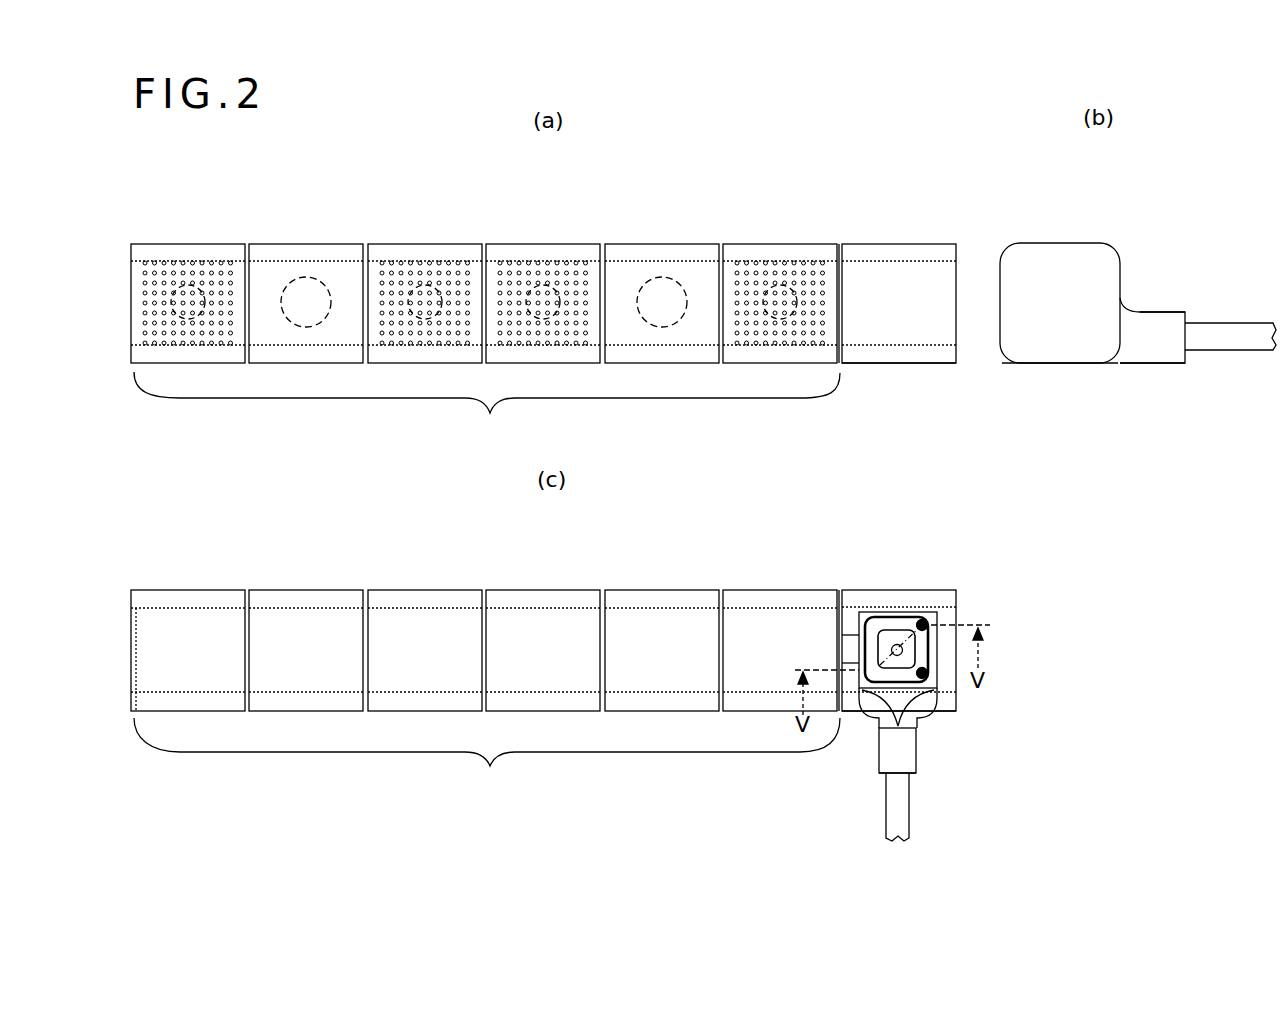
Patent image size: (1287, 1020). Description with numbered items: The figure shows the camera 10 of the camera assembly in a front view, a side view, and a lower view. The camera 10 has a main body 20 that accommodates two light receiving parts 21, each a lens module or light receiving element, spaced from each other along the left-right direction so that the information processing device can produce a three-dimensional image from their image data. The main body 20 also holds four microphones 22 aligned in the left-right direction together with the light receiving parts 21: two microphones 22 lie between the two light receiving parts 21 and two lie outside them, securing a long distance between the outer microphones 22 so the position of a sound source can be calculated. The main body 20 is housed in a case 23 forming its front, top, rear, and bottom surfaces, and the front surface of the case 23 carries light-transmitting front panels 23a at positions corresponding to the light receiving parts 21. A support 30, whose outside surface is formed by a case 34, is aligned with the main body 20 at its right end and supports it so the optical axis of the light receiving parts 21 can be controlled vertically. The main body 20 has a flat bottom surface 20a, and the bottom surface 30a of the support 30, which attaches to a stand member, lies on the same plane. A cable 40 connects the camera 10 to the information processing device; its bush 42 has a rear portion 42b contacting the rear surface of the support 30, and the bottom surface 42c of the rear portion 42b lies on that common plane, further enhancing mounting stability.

The camera 10 is at (857, 184).
The main body 20 is at (487, 579).
The bottom surface 20a is at (829, 363).
The light receiving part 21 is at (297, 280).
The microphone 22 is at (202, 275).
The case 23 is at (229, 244).
The front panel 23a is at (332, 268).
The support 30 is at (887, 377).
The bottom surface 30a is at (940, 365).
The case 34 is at (1052, 253).
The cable 40 is at (1211, 323).
The bush 42 is at (1130, 300).
The rear portion 42b is at (1157, 318).
The bottom surface 42c is at (1155, 365).